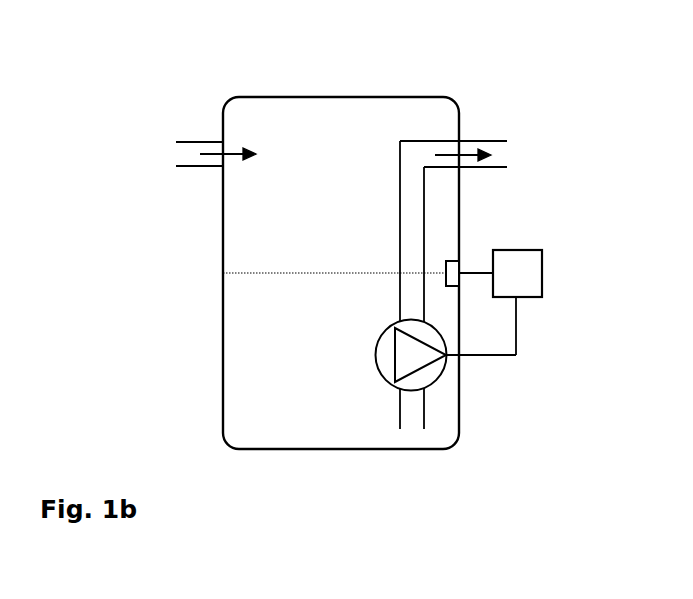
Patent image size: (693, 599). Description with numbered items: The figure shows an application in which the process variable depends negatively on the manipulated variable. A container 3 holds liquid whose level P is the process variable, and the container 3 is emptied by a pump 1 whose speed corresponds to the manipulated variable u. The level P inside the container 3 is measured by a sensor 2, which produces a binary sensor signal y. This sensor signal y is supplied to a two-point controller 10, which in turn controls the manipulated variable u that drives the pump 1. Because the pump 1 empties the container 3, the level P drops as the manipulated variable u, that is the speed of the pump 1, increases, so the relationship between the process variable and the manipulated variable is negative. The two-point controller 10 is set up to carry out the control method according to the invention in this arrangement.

The pump 1 is at (375, 355).
The sensor 2 is at (452, 261).
The container 3 is at (288, 97).
The two-point controller 10 is at (542, 272).
The process variable (level) P is at (291, 266).
The binary sensor signal y is at (474, 262).
The manipulated variable u is at (511, 368).